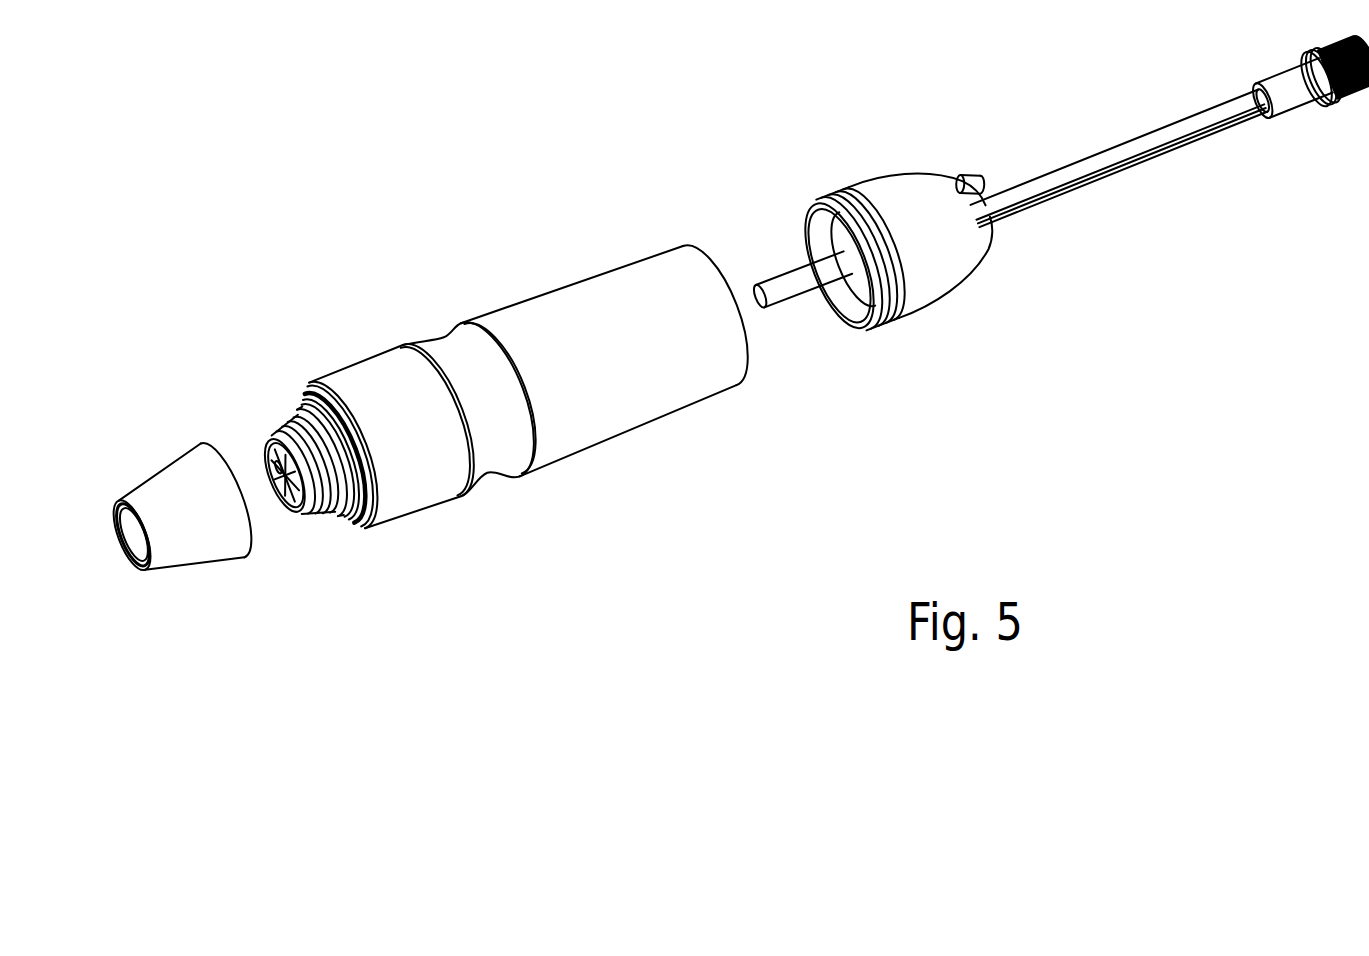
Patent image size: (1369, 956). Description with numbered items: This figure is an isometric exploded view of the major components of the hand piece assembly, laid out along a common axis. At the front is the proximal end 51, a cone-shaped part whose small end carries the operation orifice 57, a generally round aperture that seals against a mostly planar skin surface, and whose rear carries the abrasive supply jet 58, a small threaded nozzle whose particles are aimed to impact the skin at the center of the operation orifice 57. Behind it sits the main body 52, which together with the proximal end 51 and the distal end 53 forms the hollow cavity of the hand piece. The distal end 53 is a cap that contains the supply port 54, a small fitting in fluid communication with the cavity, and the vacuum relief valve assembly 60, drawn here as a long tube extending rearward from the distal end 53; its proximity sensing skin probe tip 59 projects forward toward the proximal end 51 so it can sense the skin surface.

The proximal end 51 is at (180, 448).
The main body 52 is at (450, 322).
The distal end 53 is at (899, 172).
The supply port 54 is at (992, 172).
The operation orifice 57 is at (128, 552).
The abrasive supply jet 58 is at (270, 458).
The proximity sensing skin probe tip 59 is at (757, 303).
The vacuum relief valve assembly 60 is at (1132, 167).